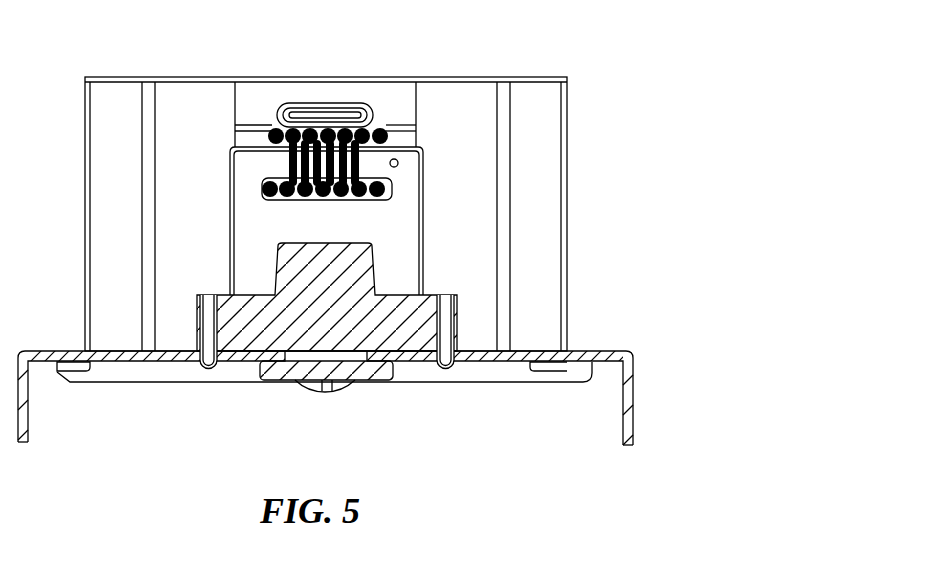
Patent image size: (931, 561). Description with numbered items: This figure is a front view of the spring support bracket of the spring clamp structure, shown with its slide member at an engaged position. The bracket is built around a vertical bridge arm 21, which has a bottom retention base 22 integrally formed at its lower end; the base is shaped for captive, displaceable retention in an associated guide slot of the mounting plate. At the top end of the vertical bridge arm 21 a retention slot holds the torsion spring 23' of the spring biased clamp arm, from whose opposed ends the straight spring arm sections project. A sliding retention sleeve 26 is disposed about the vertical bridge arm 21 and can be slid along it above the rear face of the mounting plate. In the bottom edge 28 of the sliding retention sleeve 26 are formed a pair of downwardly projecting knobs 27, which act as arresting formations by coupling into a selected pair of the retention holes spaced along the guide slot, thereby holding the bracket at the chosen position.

The vertical bridge arm 21 is at (400, 231).
The bottom retention base 22 is at (367, 364).
The torsion spring 23' is at (349, 106).
The sliding retention sleeve 26 is at (352, 283).
The downwardly projecting knobs 27 is at (210, 372).
The bottom edge 28 is at (398, 362).